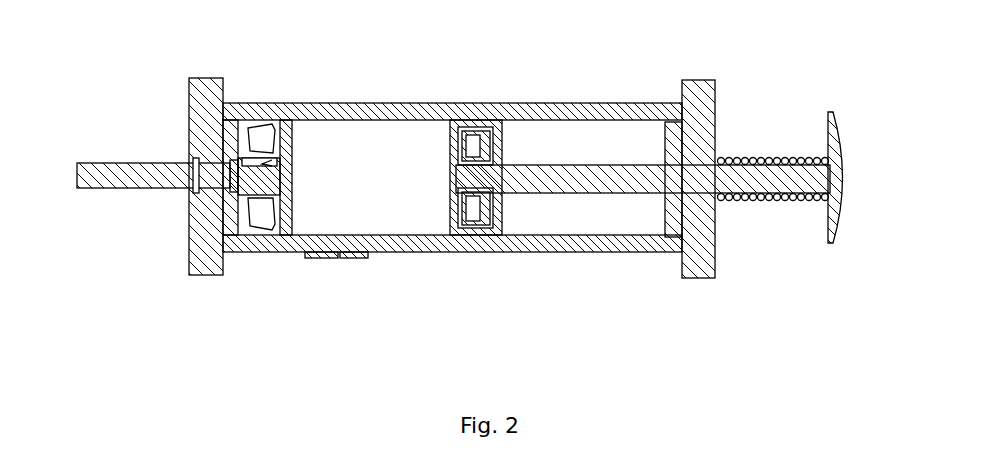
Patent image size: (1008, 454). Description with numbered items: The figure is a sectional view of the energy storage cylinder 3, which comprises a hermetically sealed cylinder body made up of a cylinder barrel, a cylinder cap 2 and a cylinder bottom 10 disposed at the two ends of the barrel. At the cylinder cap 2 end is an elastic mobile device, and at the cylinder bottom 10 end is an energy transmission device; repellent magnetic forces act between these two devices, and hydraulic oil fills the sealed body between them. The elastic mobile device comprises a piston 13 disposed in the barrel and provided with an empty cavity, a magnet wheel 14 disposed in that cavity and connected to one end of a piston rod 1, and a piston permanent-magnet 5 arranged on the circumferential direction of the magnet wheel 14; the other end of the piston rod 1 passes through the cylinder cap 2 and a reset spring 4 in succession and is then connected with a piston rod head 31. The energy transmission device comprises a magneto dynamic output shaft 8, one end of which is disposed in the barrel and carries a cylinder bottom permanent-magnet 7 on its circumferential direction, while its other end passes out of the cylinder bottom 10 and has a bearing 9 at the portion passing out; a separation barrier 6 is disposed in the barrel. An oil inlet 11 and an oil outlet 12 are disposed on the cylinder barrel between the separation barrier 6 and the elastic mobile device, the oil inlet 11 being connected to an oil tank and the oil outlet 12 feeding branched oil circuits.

The piston rod 1 is at (750, 177).
The cylinder cap 2 is at (693, 101).
The energy storage cylinder 3 is at (592, 108).
The reset spring 4 is at (812, 160).
The piston permanent-magnet 5 is at (480, 138).
The separation barrier 6 is at (280, 128).
The cylinder bottom permanent-magnet 7 is at (255, 147).
The magneto dynamic output shaft 8 is at (163, 165).
The bearing 9 is at (186, 187).
The cylinder bottom 10 is at (205, 217).
The oil inlet 11 is at (352, 260).
The oil outlet 12 is at (310, 260).
The piston 13 is at (455, 188).
The magnet wheel 14 is at (480, 217).
The piston rod head 31 is at (844, 177).